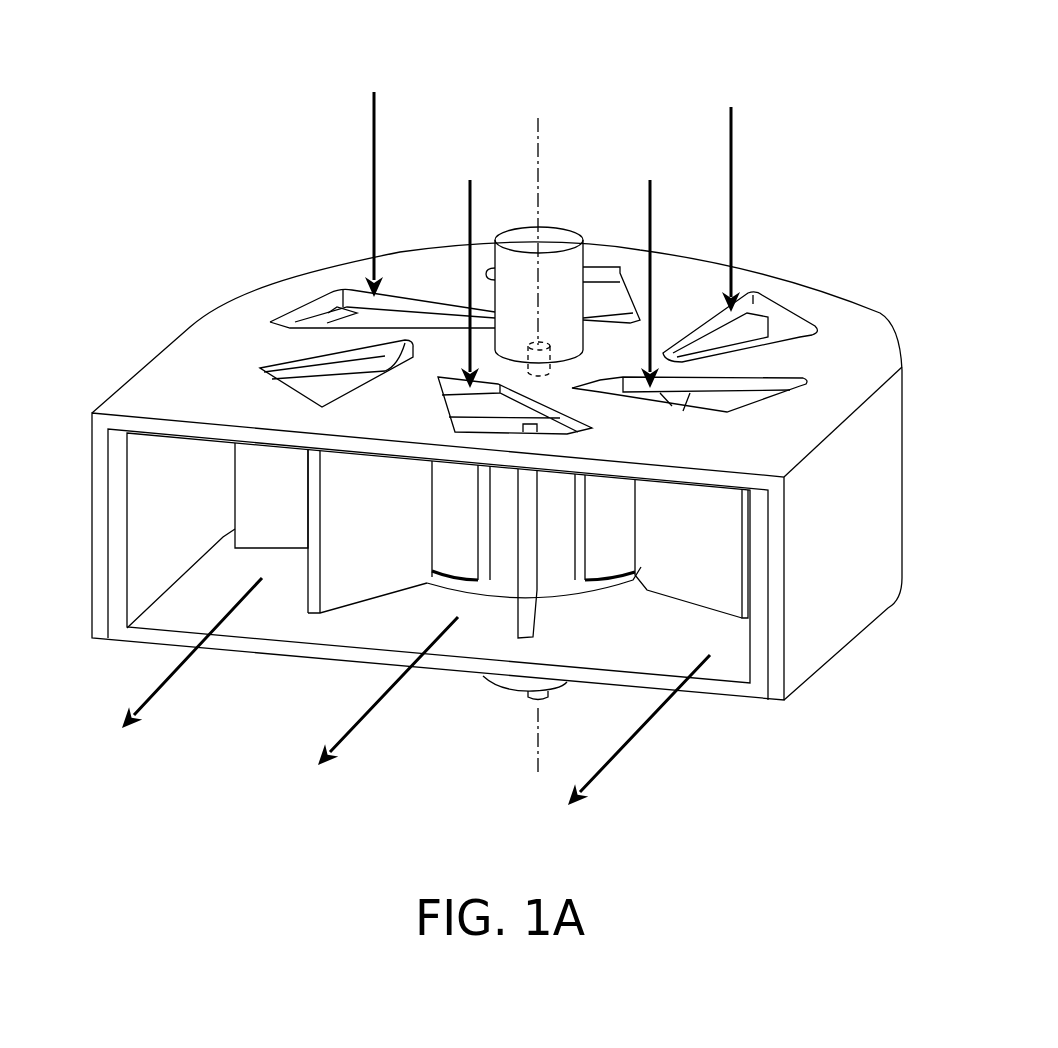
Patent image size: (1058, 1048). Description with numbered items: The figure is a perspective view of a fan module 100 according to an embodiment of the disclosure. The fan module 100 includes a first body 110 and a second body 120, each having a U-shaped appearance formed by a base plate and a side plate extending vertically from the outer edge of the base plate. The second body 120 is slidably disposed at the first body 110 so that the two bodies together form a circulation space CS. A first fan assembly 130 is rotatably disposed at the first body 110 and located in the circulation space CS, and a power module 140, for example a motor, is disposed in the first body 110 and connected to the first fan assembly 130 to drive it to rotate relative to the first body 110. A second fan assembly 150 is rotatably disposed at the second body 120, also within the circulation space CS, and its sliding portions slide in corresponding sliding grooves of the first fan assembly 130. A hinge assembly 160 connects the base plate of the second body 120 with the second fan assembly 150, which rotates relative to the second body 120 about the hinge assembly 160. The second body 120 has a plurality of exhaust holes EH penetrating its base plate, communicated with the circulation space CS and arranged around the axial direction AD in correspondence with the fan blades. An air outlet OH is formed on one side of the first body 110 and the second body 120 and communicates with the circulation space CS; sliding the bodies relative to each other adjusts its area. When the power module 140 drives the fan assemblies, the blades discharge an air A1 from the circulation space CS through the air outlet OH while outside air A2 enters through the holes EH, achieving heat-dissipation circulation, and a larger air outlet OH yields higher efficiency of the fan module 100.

The fan module 100 is at (937, 807).
The first body 110 is at (722, 690).
The second body 120 is at (893, 513).
The first fan assembly 130 is at (507, 568).
The power module 140 is at (512, 686).
The second fan assembly 150 is at (603, 553).
The hinge assembly 160 is at (550, 353).
The air A1 is at (168, 680).
The air A2 is at (372, 149).
The axial direction AD is at (539, 429).
The exhaust holes EH is at (783, 310).
The circulation space CS is at (157, 512).
The air outlet OH is at (268, 641).